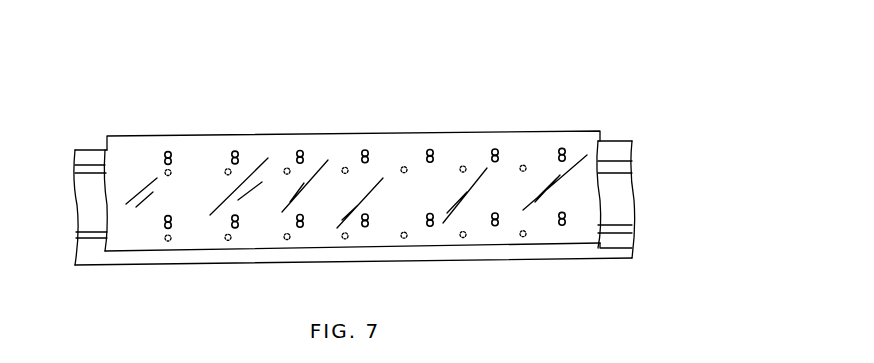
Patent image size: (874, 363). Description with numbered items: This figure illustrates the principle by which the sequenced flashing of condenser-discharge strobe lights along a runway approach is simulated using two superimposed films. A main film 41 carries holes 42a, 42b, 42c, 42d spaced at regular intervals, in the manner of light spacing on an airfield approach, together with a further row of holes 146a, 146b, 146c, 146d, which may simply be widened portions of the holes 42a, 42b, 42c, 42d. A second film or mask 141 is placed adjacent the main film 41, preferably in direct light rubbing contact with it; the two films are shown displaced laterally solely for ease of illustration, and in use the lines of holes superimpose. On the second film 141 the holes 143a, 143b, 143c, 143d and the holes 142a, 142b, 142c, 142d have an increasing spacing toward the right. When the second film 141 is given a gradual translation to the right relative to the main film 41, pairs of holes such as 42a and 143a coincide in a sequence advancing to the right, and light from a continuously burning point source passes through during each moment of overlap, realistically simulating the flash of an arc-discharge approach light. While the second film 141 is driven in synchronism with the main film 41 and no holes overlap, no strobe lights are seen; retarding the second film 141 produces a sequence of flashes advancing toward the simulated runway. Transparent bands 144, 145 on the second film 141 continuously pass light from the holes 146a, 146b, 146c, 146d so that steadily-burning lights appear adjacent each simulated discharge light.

The main film 41 is at (116, 135).
The second film 141 is at (112, 260).
The transparent band 144 is at (76, 177).
The transparent band 145 is at (76, 238).
The hole 42a is at (169, 151).
The hole 42b is at (234, 150).
The hole 42c is at (302, 151).
The hole 42d is at (369, 152).
The hole 146a is at (165, 160).
The hole 146b is at (231, 158).
The hole 146c is at (297, 158).
The hole 146d is at (362, 158).
The hole 143a is at (171, 170).
The hole 143b is at (225, 170).
The hole 143c is at (286, 168).
The hole 143d is at (344, 167).
The hole 142a is at (165, 243).
The hole 142b is at (227, 242).
The hole 142c is at (287, 242).
The hole 142d is at (345, 242).